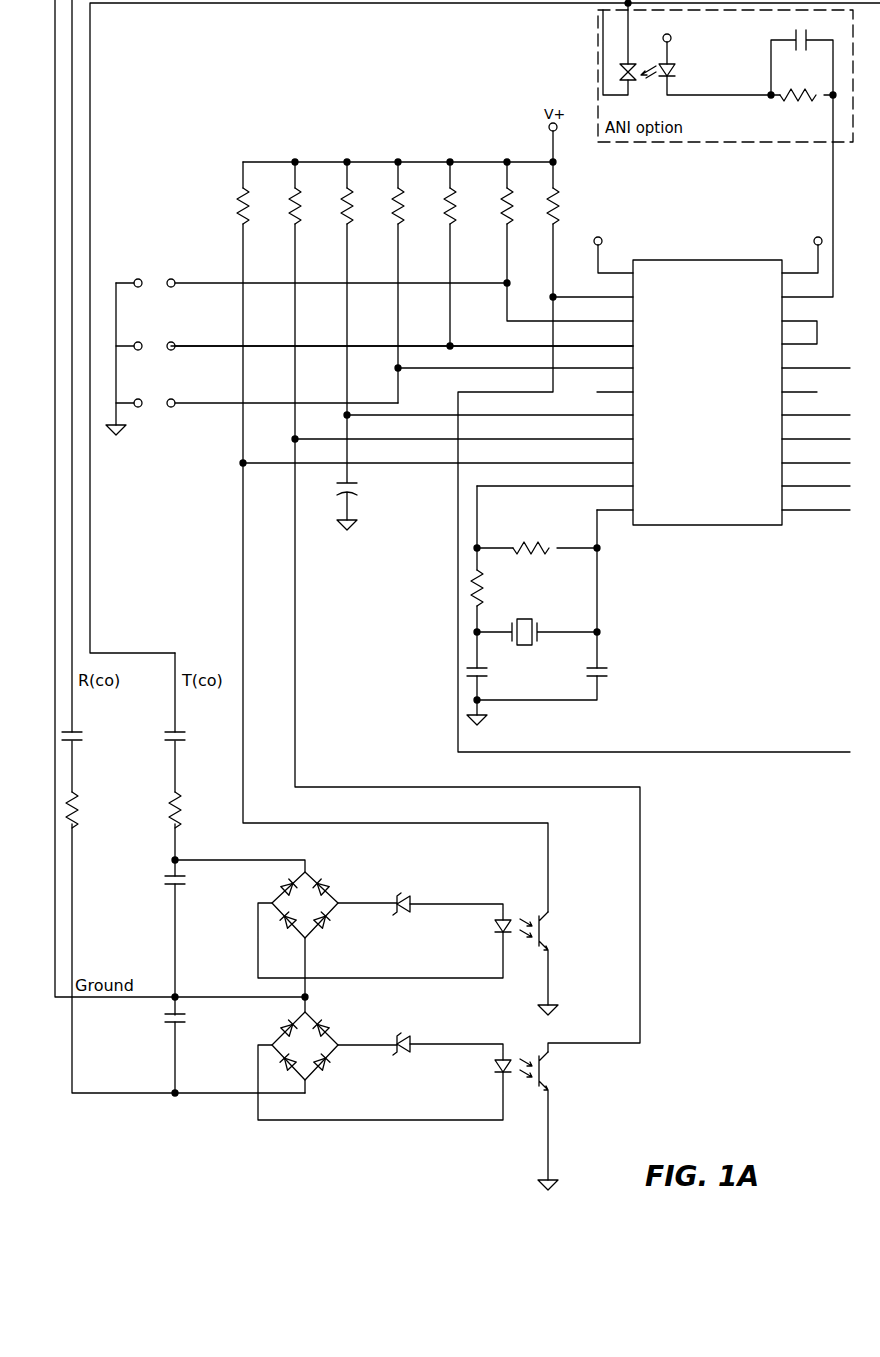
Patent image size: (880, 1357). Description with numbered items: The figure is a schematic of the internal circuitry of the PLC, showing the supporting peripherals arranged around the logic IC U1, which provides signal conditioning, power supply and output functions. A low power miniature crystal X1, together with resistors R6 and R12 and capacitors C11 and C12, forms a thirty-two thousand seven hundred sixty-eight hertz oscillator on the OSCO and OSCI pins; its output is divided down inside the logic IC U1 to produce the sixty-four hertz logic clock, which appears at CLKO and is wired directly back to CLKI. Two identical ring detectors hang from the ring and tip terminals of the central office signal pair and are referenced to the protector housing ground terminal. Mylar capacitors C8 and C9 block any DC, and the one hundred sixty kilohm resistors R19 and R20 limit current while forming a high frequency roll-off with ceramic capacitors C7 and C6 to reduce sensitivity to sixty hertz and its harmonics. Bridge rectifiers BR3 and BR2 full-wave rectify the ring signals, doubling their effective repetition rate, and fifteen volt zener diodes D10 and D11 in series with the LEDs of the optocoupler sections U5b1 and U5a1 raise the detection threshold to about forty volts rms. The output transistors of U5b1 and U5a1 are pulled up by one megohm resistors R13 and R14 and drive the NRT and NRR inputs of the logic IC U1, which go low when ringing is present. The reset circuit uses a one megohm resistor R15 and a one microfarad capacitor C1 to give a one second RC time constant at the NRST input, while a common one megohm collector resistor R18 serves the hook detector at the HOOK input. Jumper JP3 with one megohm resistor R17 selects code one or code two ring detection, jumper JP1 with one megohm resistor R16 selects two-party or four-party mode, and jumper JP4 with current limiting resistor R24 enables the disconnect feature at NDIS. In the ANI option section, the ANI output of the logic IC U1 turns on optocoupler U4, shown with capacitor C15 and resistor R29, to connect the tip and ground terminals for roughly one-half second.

The pull-up resistor R13 is at (261, 312).
The pull-up resistor R14 is at (313, 300).
The reset resistor R15 is at (365, 288).
The current limiting resistor R24 is at (416, 265).
The SL4P pull-up resistor R16 is at (468, 254).
The SL2R pull-up resistor R17 is at (525, 222).
The common collector resistor R18 is at (571, 229).
The jumper JP3 is at (311, 288).
The jumper JP1 is at (374, 349).
The jumper JP4 is at (257, 406).
The reset capacitor C1 is at (361, 472).
The PLC1A line controller IC U1 is at (510, 322).
The optocoupler U4 is at (687, 49).
The 33K resistor R29 is at (802, 93).
The 1 nF capacitor C15 is at (802, 53).
The oscillator resistor R12 is at (537, 550).
The oscillator resistor R6 is at (498, 590).
The crystal X1 is at (537, 631).
The oscillator capacitor C11 is at (497, 681).
The oscillator capacitor C12 is at (562, 681).
The DC blocking capacitor C8 is at (97, 747).
The DC blocking capacitor C9 is at (200, 747).
The current limiting resistor R19 is at (93, 810).
The current limiting resistor R20 is at (196, 810).
The roll-off capacitor C7 is at (201, 890).
The roll-off capacitor C6 is at (201, 1026).
The bridge rectifier BR3 is at (380, 923).
The bridge rectifier BR2 is at (380, 1058).
The zener diode D10 is at (448, 906).
The zener diode D11 is at (448, 1046).
The optocoupler section U5b1 is at (558, 963).
The optocoupler section U5a1 is at (558, 1121).